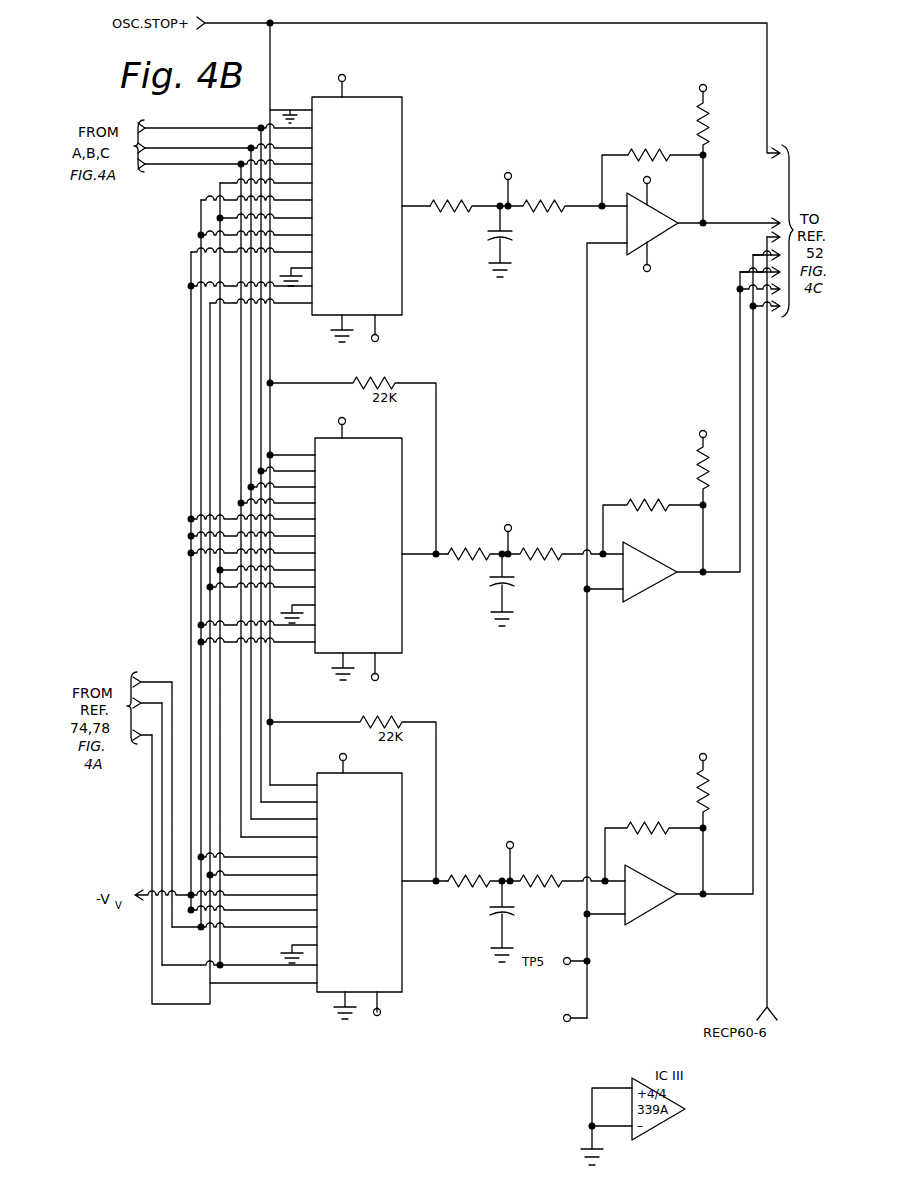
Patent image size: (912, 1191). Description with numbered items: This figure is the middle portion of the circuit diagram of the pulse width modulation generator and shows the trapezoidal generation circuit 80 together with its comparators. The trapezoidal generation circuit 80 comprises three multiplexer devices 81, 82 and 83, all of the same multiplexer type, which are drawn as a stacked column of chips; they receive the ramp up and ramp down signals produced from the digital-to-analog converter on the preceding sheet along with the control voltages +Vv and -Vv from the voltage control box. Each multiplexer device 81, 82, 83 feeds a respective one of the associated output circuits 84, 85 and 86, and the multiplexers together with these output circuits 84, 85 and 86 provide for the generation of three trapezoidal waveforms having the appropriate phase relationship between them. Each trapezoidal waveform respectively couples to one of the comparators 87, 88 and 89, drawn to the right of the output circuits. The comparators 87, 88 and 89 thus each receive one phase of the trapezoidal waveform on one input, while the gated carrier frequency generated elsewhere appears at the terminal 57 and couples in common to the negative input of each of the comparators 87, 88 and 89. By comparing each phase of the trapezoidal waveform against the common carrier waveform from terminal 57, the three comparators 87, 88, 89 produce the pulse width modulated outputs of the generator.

The trapezoidal generation circuit 80 is at (382, 1046).
The multiplexer device 81 is at (364, 252).
The multiplexer device 82 is at (366, 604).
The multiplexer device 83 is at (366, 941).
The output circuit 84 is at (480, 226).
The output circuit 85 is at (488, 573).
The output circuit 86 is at (489, 902).
The comparator 87 is at (627, 230).
The comparator 88 is at (625, 566).
The comparator 89 is at (626, 888).
The terminal 57 is at (567, 1022).